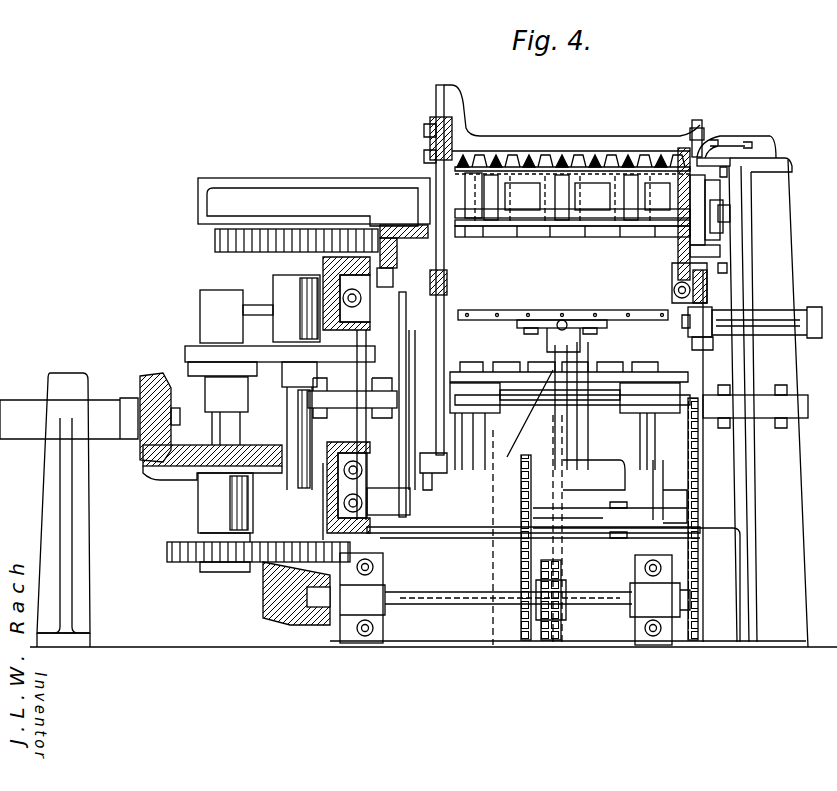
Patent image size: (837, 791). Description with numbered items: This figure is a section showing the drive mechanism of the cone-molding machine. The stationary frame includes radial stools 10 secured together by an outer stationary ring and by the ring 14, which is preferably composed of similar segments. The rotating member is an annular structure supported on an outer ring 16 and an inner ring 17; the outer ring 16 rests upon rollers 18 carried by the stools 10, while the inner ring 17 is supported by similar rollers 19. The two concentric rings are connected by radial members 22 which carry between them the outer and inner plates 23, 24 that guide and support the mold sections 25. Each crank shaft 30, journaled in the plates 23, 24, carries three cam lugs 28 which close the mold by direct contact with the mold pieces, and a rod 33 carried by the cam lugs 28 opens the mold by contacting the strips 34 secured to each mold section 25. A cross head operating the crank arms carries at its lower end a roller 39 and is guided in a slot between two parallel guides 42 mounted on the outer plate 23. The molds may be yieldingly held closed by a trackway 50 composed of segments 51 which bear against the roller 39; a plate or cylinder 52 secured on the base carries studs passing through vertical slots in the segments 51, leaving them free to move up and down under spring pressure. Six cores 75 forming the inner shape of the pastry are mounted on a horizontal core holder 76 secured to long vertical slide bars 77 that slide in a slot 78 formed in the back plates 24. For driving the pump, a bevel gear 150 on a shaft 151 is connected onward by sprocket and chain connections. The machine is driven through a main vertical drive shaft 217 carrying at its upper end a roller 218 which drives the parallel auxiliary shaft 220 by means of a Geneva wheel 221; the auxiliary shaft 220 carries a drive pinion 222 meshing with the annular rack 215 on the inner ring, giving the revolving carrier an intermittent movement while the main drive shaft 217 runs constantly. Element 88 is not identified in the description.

The radial stool 10 is at (533, 547).
The ring 14 is at (330, 300).
The outer ring 16 is at (672, 286).
The inner ring 17 is at (390, 258).
The rollers 18 is at (698, 336).
The rollers 19 is at (390, 278).
The radial members 22 is at (386, 186).
The outer plate 23 is at (670, 266).
The inner plate 24 is at (450, 272).
The mold section 25 is at (632, 170).
The cam lugs 28 is at (560, 228).
The crank shaft 30 is at (580, 310).
The rod 33 is at (587, 196).
The strips 34 is at (490, 225).
The roller 39 is at (740, 235).
The parallel guides 42 is at (705, 247).
The trackway 50 is at (738, 212).
The segments 51 is at (430, 476).
The plate or cylinder 52 is at (735, 258).
The cores 75 is at (596, 150).
The core holder 76 is at (560, 140).
The vertical slide bars 77 is at (436, 98).
The slot 78 is at (430, 119).
The bolt 88 is at (700, 122).
The bevel gear 150 is at (310, 605).
The shaft 151 is at (447, 595).
The annular rack 215 is at (366, 230).
The main vertical drive shaft 217 is at (228, 438).
The roller 218 is at (185, 352).
The auxiliary shaft 220 is at (288, 418).
The Geneva wheel 221 is at (213, 340).
The drive pinion 222 is at (222, 254).